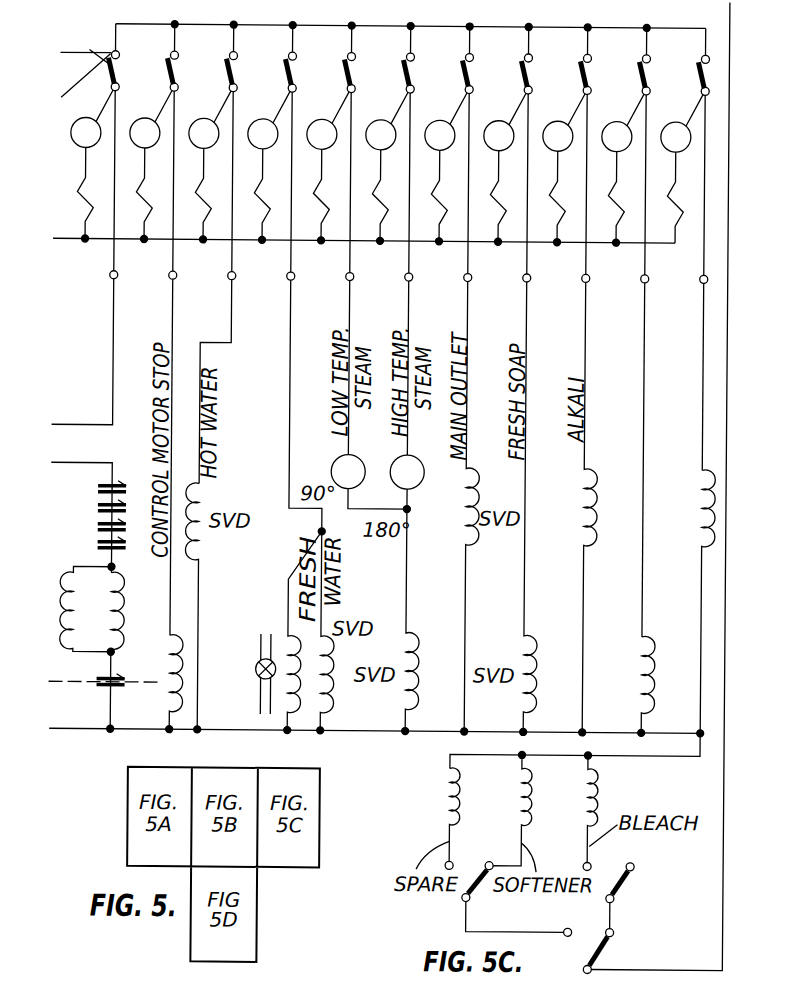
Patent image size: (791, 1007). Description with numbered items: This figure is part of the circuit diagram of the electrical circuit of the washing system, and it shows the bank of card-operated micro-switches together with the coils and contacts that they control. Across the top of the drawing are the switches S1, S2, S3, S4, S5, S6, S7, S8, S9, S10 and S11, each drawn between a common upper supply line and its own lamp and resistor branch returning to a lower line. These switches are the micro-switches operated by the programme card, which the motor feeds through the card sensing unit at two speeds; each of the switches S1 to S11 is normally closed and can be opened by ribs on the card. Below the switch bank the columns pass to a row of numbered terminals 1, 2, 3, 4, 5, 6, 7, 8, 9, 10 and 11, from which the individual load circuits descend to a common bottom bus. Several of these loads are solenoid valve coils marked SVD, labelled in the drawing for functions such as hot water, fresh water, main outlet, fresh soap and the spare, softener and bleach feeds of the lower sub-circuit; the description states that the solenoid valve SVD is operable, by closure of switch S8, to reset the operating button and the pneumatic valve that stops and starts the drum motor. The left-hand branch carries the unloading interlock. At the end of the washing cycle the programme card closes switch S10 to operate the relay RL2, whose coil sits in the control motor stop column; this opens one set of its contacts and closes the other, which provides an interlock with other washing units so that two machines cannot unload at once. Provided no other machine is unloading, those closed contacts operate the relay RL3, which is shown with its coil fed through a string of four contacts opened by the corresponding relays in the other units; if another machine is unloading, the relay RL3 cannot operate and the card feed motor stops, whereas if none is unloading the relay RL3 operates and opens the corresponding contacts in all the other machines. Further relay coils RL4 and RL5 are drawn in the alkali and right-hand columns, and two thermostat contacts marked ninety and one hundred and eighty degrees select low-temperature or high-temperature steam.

The terminal 1 is at (696, 279).
The terminal 2 is at (637, 279).
The terminal 3 is at (578, 278).
The terminal 4 is at (519, 278).
The terminal 5 is at (460, 277).
The terminal 6 is at (401, 277).
The terminal 7 is at (342, 276).
The terminal 8 is at (283, 276).
The terminal 9 is at (224, 276).
The terminal 10 is at (158, 275).
The terminal 11 is at (99, 274).
The micro-switch S1 is at (691, 75).
The micro-switch S2 is at (632, 75).
The micro-switch S3 is at (573, 74).
The micro-switch S4 is at (514, 74).
The micro-switch S5 is at (455, 73).
The micro-switch S6 is at (396, 73).
The micro-switch S7 is at (337, 72).
The micro-switch S8 is at (278, 72).
The micro-switch S9 is at (219, 71).
The micro-switch S10 is at (153, 71).
The micro-switch S11 is at (89, 61).
The relay RL2 is at (181, 652).
The relay RL3 is at (74, 624).
The relay coil RL4 is at (631, 684).
The relay coil RL5 is at (693, 602).
The solenoid valve SVD is at (518, 810).